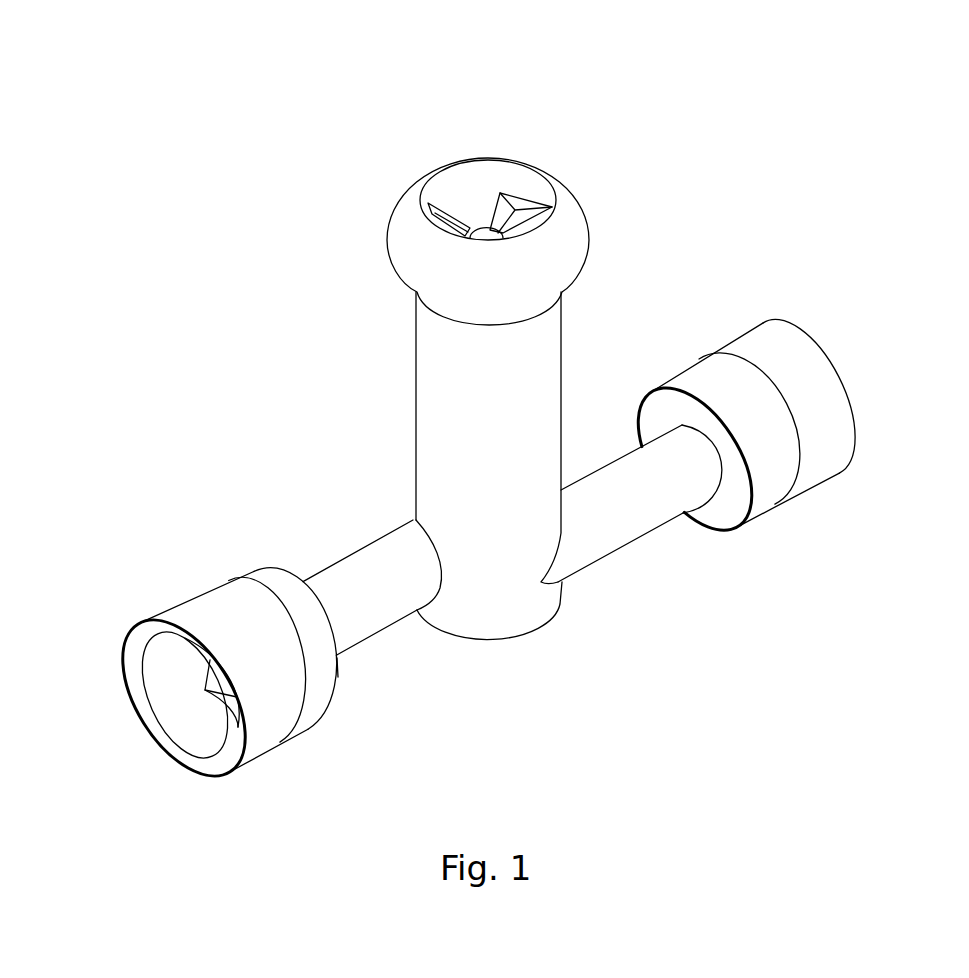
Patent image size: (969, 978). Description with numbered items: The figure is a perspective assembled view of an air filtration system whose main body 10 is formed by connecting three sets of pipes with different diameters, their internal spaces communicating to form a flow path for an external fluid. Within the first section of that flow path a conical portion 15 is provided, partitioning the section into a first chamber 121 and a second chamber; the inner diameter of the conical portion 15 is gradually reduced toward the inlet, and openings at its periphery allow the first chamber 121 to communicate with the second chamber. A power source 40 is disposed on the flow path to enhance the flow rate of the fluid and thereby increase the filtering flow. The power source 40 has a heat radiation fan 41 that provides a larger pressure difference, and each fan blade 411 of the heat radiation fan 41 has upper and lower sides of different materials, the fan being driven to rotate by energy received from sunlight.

The main body 10 is at (335, 545).
The conical portion 15 is at (220, 683).
The first chamber 121 is at (163, 678).
The power source 40 is at (573, 200).
The heat radiation fan 41 is at (480, 225).
The fan blade 411 is at (522, 203).